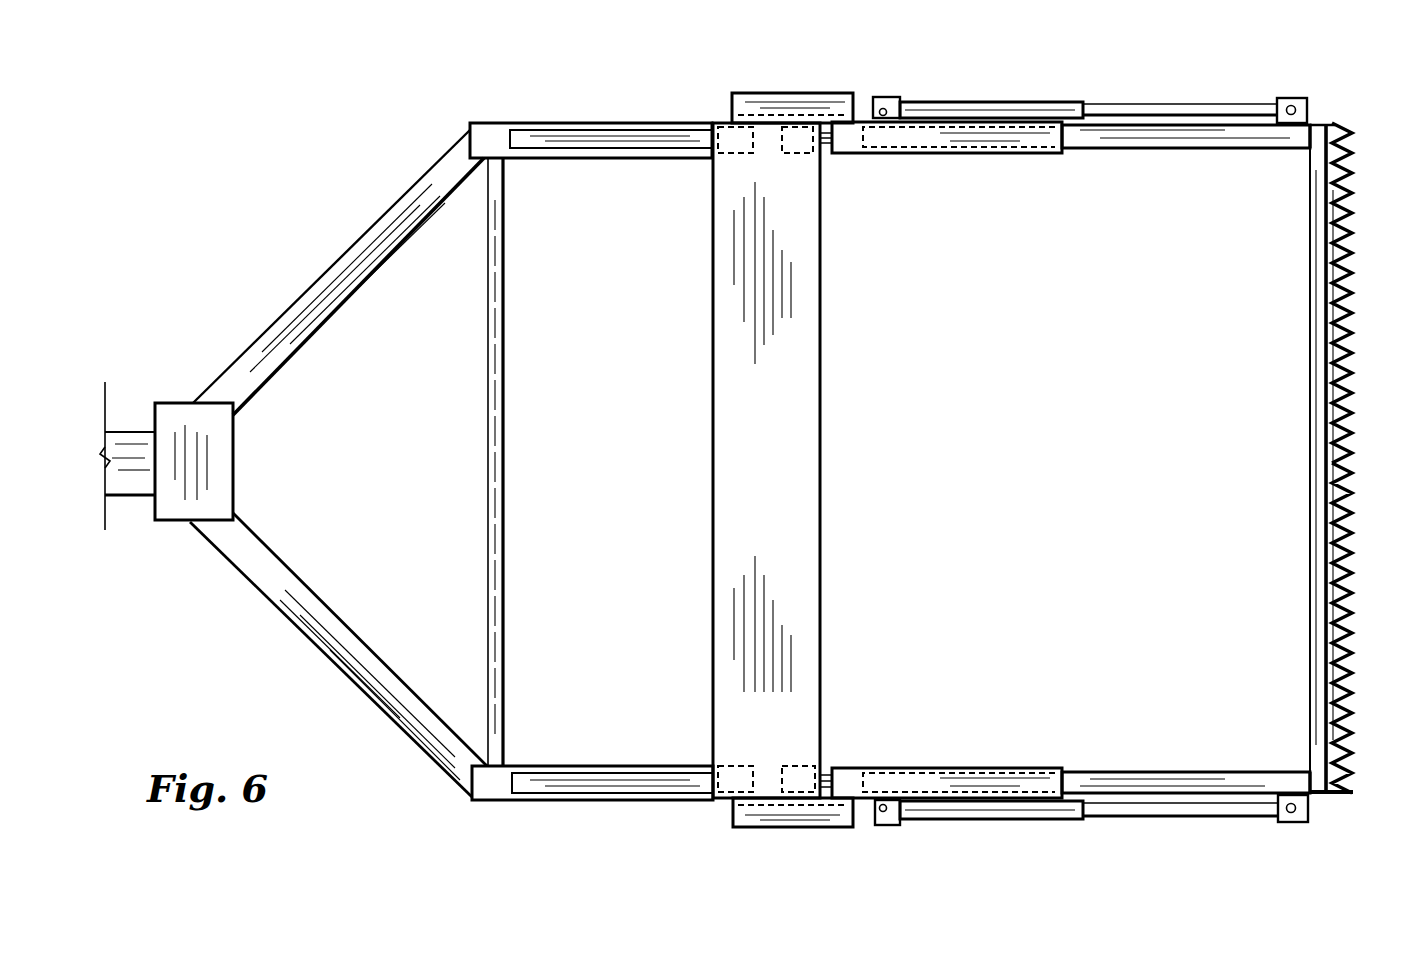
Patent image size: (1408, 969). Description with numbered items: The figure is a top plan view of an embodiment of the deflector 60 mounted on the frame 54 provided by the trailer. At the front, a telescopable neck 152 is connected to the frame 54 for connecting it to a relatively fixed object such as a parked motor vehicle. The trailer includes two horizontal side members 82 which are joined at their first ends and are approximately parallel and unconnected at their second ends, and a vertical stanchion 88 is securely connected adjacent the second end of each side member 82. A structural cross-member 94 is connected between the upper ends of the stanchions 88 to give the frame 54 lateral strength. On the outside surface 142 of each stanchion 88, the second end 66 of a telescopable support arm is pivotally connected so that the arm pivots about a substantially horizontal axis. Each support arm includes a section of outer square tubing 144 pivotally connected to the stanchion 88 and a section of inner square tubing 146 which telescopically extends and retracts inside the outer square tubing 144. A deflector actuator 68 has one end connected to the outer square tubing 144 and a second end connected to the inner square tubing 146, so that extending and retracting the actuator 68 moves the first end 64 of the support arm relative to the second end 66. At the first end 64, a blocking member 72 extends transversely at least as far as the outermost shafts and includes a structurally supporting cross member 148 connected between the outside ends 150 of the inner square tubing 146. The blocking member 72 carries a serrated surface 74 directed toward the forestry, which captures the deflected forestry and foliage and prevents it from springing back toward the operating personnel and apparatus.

The frame 54 is at (355, 272).
The telescopable neck 152 is at (123, 433).
The horizontal side members 82 is at (485, 135).
The vertical stanchion 88 is at (688, 452).
The outside surface 142 is at (720, 122).
The second end 66 is at (818, 105).
The structural cross-member 94 is at (800, 524).
The outer square tubing 144 is at (852, 140).
The inner square tubing 146 is at (1130, 138).
The first end 64 is at (1195, 459).
The outside ends 150 is at (1287, 140).
The structurally supporting cross member 148 is at (1317, 485).
The blocking member 72 is at (1343, 525).
The serrated surface 74 is at (1348, 677).
The deflector 60 is at (975, 93).
The deflector actuator 68 is at (1043, 112).